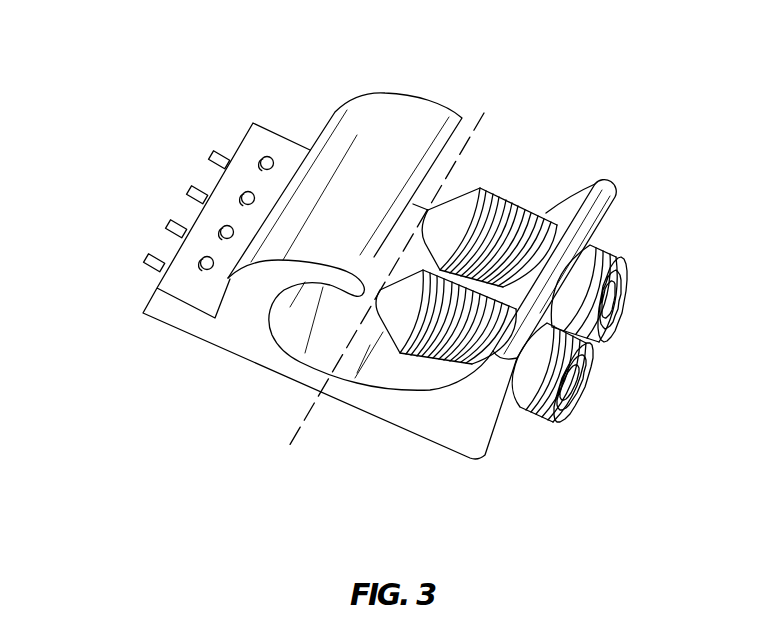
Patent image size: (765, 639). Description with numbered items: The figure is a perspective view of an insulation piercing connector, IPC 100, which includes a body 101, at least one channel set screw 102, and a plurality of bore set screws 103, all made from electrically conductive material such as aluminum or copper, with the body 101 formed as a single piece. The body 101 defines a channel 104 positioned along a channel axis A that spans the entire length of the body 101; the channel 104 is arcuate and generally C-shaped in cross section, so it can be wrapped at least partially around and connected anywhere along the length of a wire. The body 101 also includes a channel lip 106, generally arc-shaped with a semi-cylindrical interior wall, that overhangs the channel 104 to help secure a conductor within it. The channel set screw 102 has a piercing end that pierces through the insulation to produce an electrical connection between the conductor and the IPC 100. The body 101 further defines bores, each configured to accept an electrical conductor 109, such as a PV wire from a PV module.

The IPC 100 is at (453, 31).
The body 101 is at (601, 203).
The channel set screw 102 is at (627, 259).
The bore set screws 103 is at (271, 157).
The channel 104 is at (291, 310).
The channel lip 106 is at (443, 128).
The electrical conductor 109 is at (146, 256).